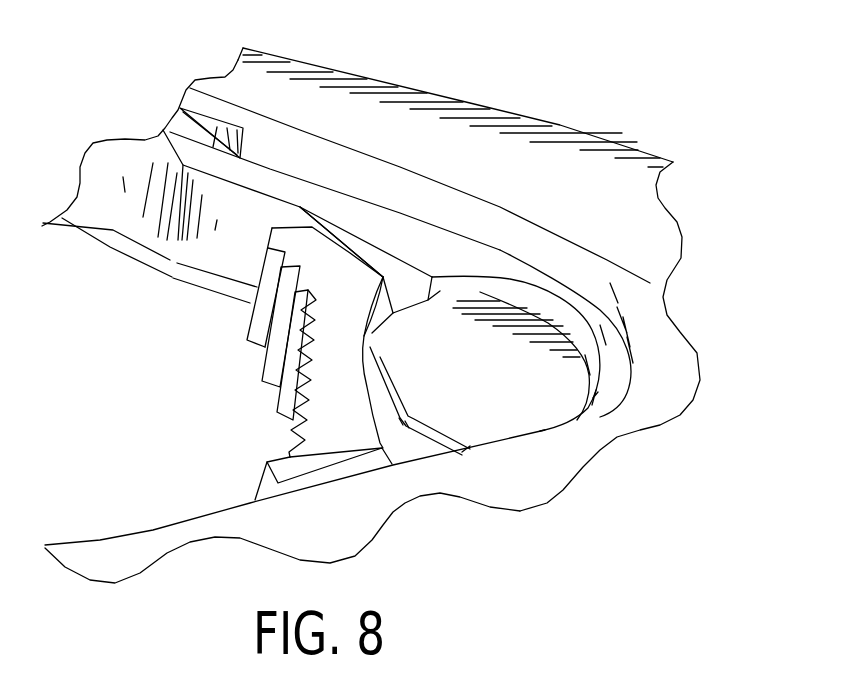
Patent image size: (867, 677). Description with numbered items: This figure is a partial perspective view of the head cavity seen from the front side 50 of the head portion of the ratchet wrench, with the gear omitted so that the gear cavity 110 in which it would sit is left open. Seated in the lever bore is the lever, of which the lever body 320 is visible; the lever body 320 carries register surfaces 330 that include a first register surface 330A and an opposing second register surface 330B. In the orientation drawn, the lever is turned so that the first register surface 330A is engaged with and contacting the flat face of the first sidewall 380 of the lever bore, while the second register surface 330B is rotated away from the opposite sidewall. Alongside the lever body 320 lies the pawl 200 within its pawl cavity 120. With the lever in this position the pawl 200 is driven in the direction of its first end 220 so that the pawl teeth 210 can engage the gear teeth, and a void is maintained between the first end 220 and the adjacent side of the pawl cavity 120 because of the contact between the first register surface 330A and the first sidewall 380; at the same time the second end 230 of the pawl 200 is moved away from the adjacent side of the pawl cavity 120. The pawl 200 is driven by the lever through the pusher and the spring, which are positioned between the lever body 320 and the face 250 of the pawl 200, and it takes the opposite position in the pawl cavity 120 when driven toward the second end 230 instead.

The front side 50 is at (417, 130).
The gear cavity 110 is at (93, 398).
The pawl cavity 120 is at (228, 445).
The pawl 200 is at (302, 258).
The pawl teeth 210 is at (275, 392).
The first end 220 is at (352, 250).
The second end 230 is at (369, 474).
The face 250 is at (378, 334).
The lever body 320 is at (513, 403).
The register surfaces 330 is at (548, 352).
The first register surface 330A is at (443, 286).
The second register surface 330B is at (434, 452).
The groove band 380 is at (476, 287).